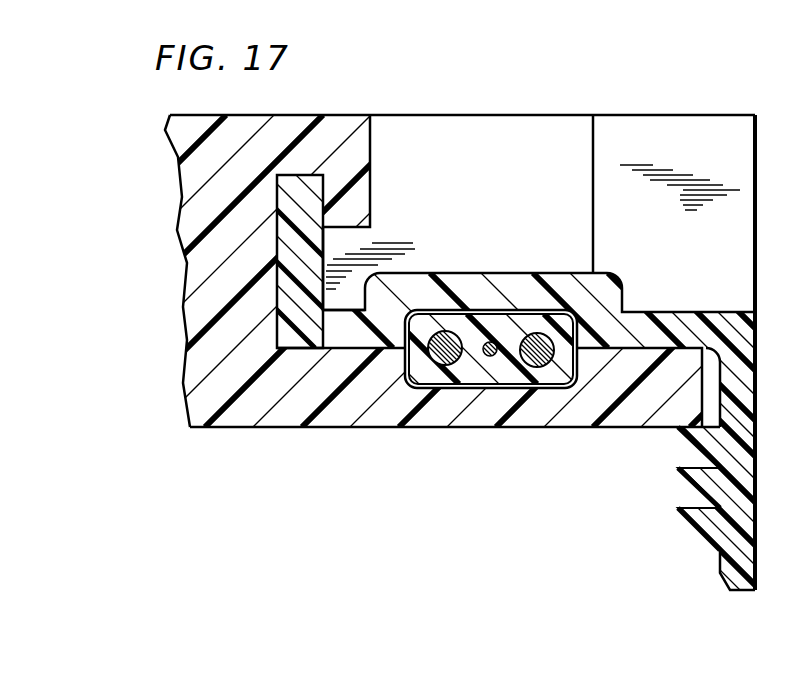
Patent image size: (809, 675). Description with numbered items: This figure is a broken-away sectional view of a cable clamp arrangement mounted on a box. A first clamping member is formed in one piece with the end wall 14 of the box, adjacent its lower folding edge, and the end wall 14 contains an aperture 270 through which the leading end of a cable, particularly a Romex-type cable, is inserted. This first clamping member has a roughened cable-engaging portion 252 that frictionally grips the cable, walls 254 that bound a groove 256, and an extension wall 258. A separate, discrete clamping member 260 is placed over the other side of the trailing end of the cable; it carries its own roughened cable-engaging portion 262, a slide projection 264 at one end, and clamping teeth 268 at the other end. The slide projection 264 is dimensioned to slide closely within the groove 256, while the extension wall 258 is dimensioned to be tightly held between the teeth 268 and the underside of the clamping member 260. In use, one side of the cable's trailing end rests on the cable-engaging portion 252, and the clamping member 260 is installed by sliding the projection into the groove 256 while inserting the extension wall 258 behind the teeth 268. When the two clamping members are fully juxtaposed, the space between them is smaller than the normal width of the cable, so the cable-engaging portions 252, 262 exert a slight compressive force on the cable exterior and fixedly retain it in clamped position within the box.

The end wall 14 is at (662, 236).
The cable-engaging portion 252 is at (480, 384).
The walls 254 is at (323, 132).
The groove 256 is at (277, 244).
The extension wall 258 is at (657, 407).
The clamping member 260 is at (407, 270).
The cable-engaging portion 262 is at (527, 316).
The slide projection 264 is at (293, 285).
The clamping teeth 268 is at (700, 505).
The aperture 270 is at (540, 113).